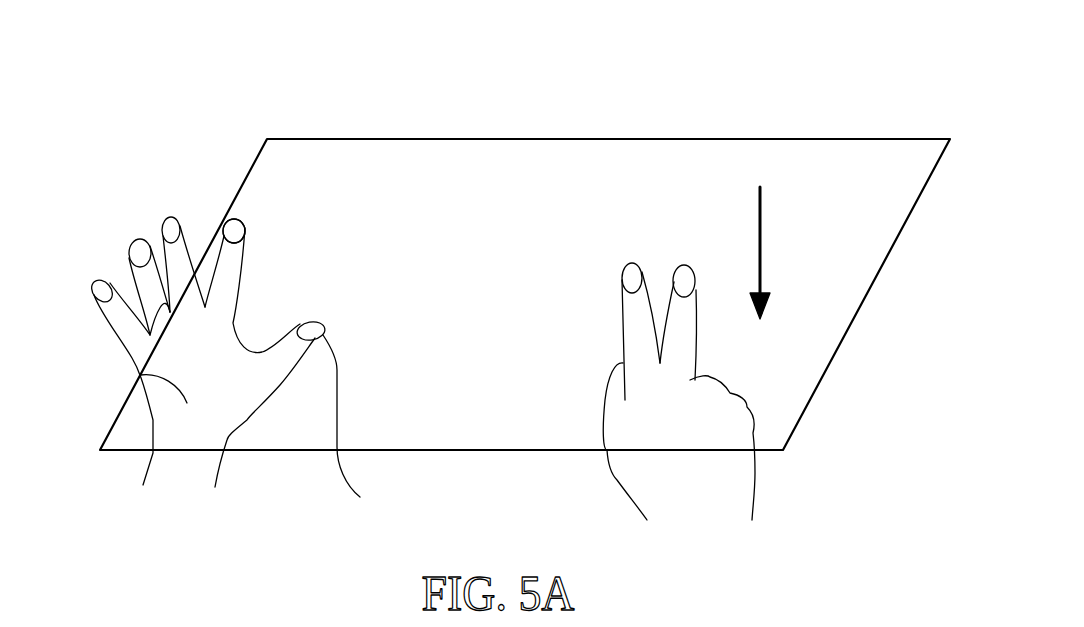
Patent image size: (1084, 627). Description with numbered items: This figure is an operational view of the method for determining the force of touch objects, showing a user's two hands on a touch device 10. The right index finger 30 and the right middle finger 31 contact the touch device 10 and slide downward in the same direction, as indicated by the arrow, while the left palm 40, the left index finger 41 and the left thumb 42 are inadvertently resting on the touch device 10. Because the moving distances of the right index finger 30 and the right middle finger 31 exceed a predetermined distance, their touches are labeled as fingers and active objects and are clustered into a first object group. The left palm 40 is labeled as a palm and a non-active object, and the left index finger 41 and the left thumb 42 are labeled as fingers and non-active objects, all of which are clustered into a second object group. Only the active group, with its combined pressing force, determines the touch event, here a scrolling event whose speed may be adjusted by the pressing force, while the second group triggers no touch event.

The touch device 10 is at (768, 140).
The right index finger 30 is at (630, 265).
The right middle finger 31 is at (684, 266).
The left palm 40 is at (140, 375).
The left index finger 41 is at (230, 228).
The left thumb 42 is at (308, 420).